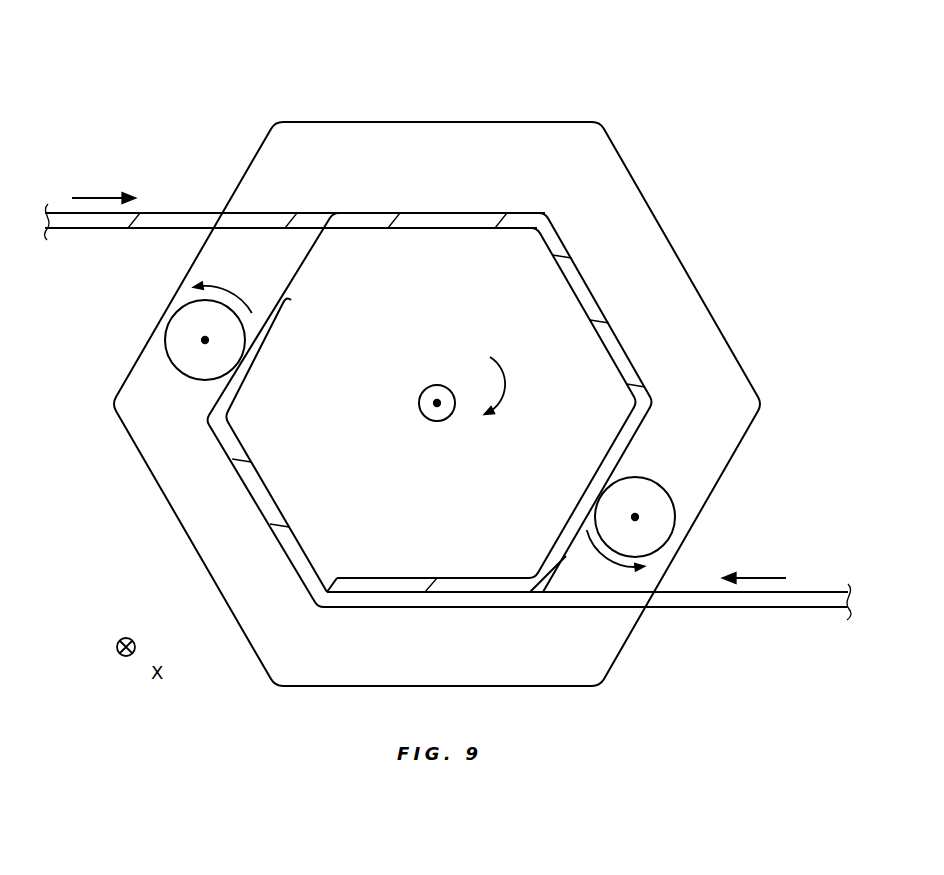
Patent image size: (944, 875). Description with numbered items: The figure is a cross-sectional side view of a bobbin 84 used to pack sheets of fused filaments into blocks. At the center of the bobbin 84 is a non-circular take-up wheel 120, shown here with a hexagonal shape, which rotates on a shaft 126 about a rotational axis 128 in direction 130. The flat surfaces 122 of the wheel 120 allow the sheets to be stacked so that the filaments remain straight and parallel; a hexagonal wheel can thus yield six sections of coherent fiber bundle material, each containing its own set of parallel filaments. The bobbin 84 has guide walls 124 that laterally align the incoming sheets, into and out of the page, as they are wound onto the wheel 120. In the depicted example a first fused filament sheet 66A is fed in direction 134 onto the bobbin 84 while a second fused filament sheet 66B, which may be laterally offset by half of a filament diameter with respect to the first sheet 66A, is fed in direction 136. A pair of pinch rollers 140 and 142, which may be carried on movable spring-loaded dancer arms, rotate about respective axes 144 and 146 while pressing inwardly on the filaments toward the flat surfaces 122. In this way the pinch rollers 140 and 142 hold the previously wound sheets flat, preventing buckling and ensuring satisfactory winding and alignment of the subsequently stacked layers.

The bobbin 84 is at (643, 59).
The guide walls 124 is at (517, 136).
The first fused filament sheet 66A is at (185, 226).
The second fused filament sheet 66B is at (804, 600).
The take-up wheel 120 is at (548, 282).
The flat surfaces 122 is at (627, 352).
The shaft 126 is at (418, 405).
The rotational axis 128 is at (434, 393).
The direction 130 is at (503, 383).
The direction 134 is at (98, 196).
The direction 136 is at (763, 577).
The pinch roller 140 is at (183, 317).
The axis 144 is at (200, 340).
The pinch roller 142 is at (692, 497).
The axis 146 is at (640, 513).